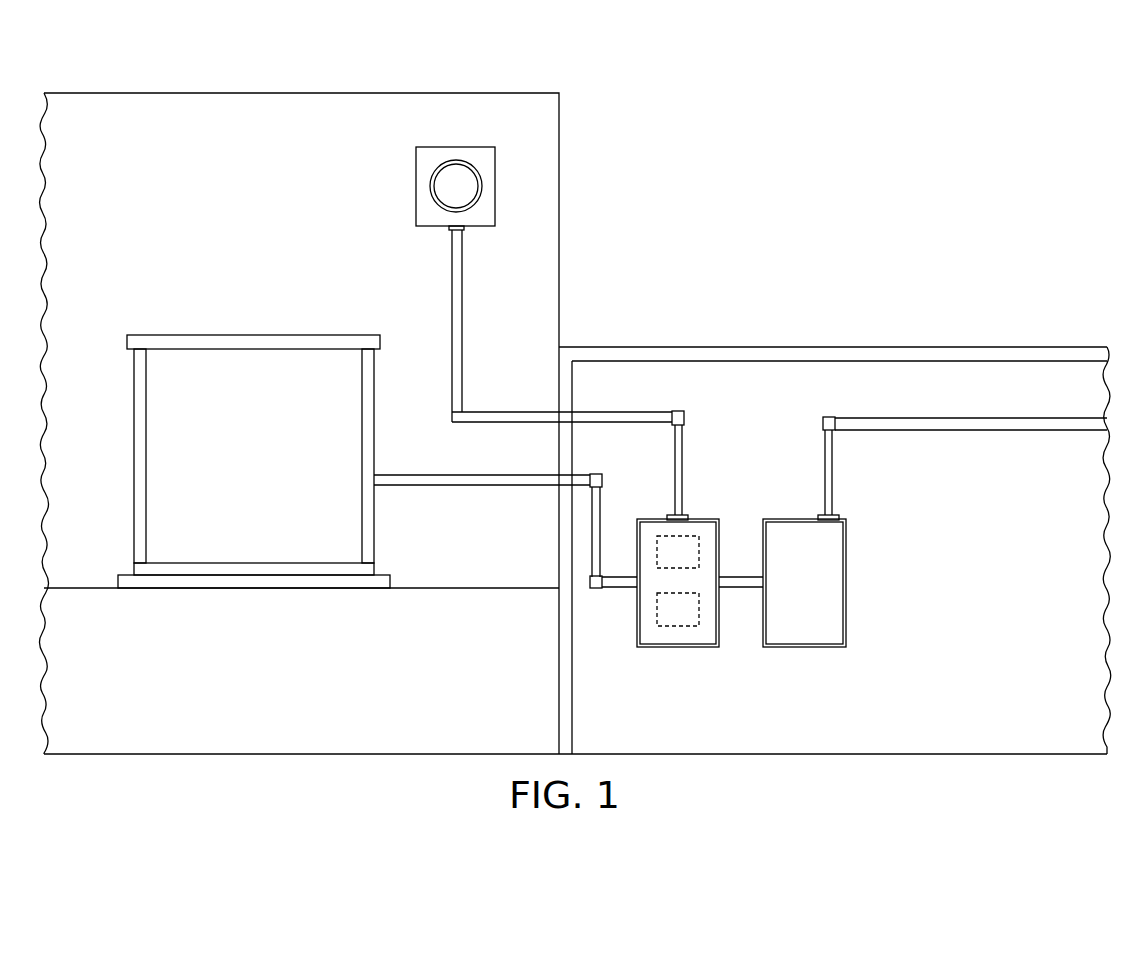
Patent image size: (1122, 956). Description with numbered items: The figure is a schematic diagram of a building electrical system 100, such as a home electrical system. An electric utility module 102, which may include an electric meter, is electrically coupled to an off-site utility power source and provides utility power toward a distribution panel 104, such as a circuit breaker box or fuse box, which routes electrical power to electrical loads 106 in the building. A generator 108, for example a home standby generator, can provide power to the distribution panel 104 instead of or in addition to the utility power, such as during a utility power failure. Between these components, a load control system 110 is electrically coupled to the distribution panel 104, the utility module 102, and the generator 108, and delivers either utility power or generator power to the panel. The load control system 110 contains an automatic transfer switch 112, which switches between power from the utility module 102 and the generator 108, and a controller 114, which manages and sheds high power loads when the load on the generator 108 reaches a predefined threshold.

The electrical system 100 is at (697, 188).
The electric utility module 102 is at (425, 157).
The distribution panel 104 is at (824, 565).
The electrical loads 106 is at (1096, 410).
The generator 108 is at (318, 343).
The load control system 110 is at (678, 575).
The automatic transfer switch 112 is at (685, 545).
The controller 114 is at (670, 612).